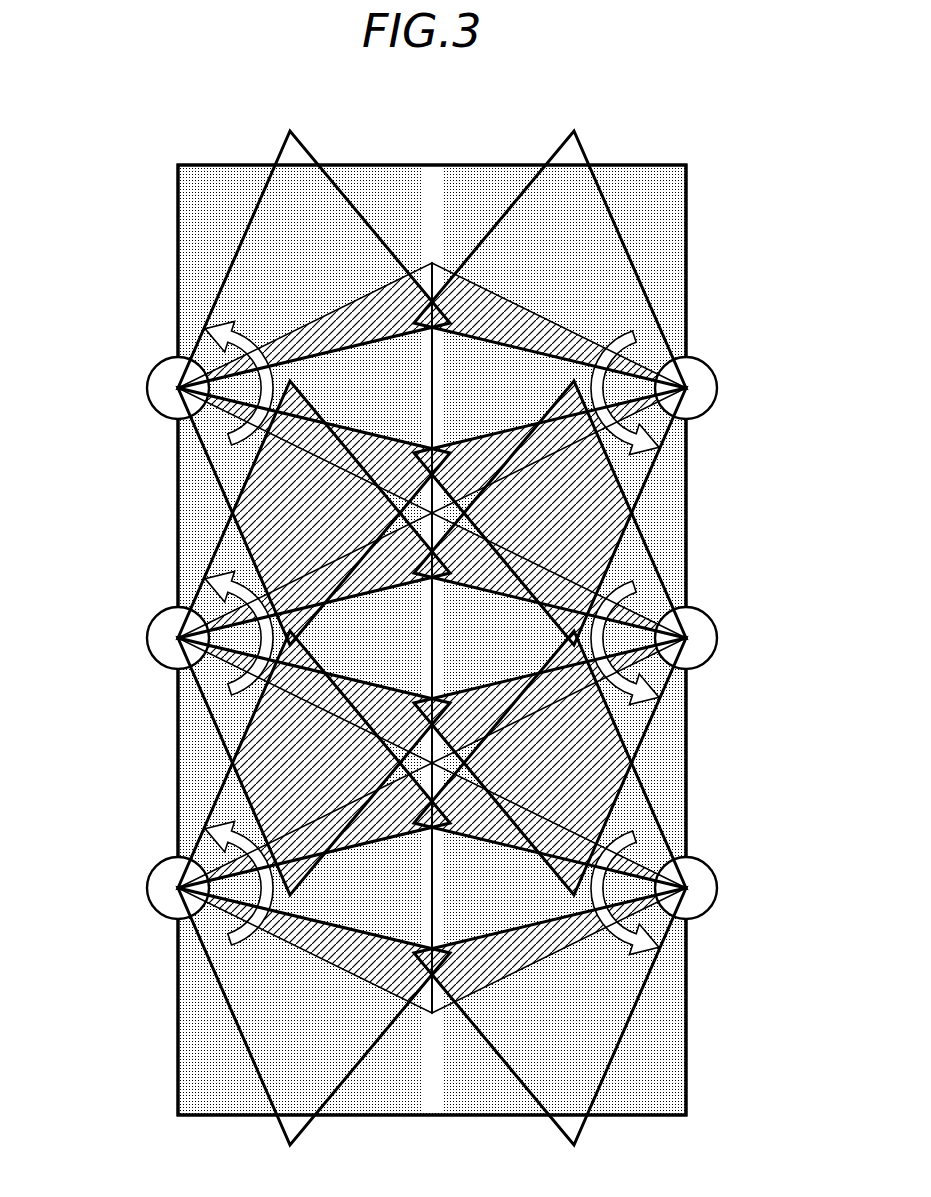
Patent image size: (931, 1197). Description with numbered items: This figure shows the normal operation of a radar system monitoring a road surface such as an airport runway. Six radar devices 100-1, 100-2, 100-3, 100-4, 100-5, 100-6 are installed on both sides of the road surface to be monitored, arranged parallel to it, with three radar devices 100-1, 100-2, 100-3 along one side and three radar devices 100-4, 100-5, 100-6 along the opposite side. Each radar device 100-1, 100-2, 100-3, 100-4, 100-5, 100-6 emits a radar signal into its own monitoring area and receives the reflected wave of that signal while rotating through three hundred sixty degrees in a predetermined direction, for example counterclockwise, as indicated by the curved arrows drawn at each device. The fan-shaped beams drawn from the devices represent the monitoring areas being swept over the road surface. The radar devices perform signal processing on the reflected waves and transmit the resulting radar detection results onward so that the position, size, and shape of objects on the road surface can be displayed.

The radar device 100-1 is at (715, 373).
The radar device 100-2 is at (715, 623).
The radar device 100-3 is at (715, 873).
The radar device 100-4 is at (148, 897).
The radar device 100-5 is at (148, 647).
The radar device 100-6 is at (148, 397).